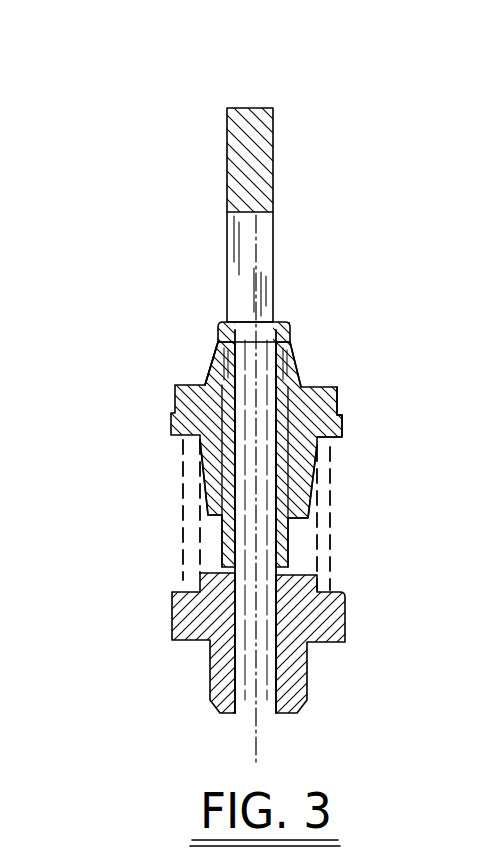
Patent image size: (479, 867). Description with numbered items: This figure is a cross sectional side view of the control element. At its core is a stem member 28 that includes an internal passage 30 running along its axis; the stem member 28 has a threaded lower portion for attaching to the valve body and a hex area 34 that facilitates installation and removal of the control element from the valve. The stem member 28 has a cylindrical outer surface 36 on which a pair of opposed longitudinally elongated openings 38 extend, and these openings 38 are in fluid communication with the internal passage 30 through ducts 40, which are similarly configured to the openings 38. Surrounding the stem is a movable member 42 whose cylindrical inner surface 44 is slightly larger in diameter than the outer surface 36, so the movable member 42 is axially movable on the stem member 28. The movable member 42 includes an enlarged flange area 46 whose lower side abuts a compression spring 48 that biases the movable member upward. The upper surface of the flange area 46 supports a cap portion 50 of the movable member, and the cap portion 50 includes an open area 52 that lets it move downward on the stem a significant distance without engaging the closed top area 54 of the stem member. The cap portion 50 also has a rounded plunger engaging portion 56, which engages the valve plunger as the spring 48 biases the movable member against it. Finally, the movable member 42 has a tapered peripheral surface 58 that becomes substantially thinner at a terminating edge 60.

The stem member 28 is at (290, 553).
The internal passage 30 is at (277, 713).
The hex area 34 is at (332, 613).
The cylindrical outer surface 36 is at (220, 548).
The longitudinally elongated openings 38 is at (298, 363).
The ducts 40 is at (217, 352).
The movable member 42 is at (342, 427).
The cylindrical inner surface 44 is at (225, 447).
The enlarged flange area 46 is at (168, 428).
The compression spring 48 is at (322, 492).
The cap portion 50 is at (273, 148).
The open area 52 is at (275, 248).
The closed top area 54 is at (278, 300).
The rounded plunger engaging portion 56 is at (250, 108).
The tapered peripheral surface 58 is at (300, 378).
The terminating edge 60 is at (297, 340).